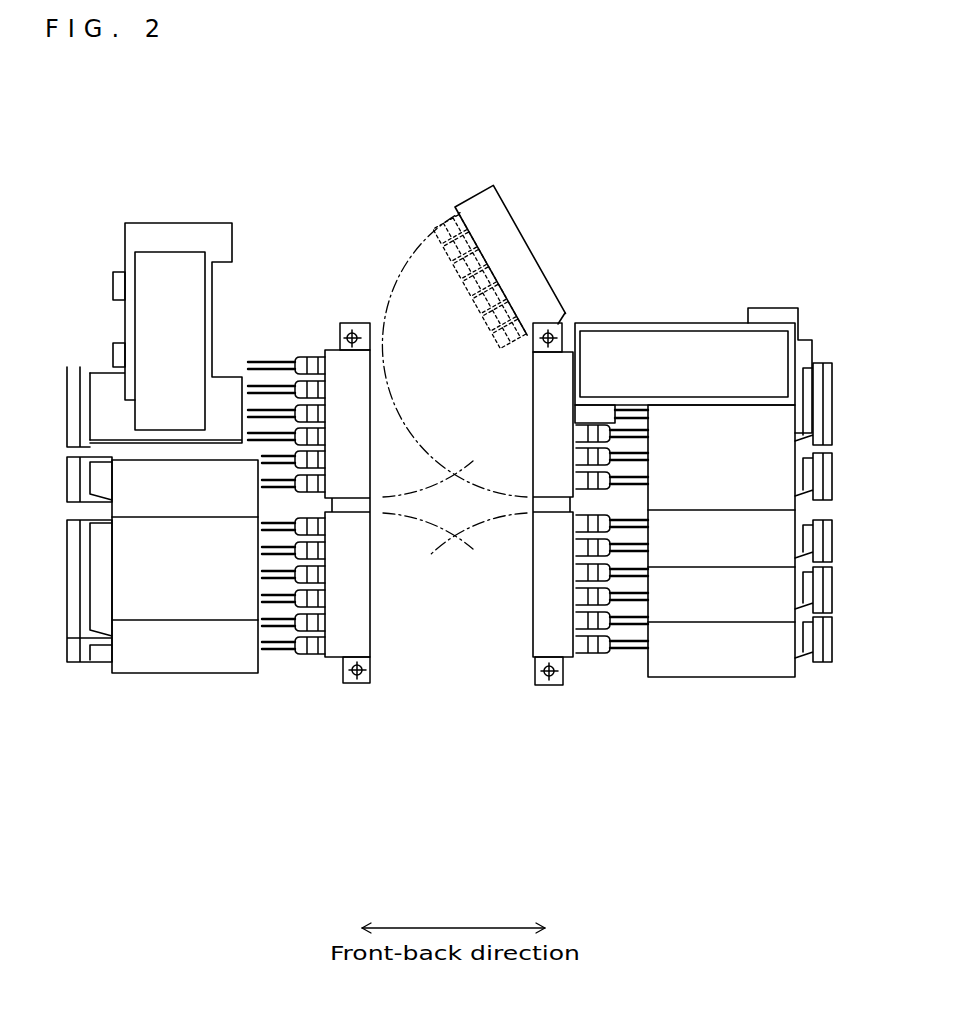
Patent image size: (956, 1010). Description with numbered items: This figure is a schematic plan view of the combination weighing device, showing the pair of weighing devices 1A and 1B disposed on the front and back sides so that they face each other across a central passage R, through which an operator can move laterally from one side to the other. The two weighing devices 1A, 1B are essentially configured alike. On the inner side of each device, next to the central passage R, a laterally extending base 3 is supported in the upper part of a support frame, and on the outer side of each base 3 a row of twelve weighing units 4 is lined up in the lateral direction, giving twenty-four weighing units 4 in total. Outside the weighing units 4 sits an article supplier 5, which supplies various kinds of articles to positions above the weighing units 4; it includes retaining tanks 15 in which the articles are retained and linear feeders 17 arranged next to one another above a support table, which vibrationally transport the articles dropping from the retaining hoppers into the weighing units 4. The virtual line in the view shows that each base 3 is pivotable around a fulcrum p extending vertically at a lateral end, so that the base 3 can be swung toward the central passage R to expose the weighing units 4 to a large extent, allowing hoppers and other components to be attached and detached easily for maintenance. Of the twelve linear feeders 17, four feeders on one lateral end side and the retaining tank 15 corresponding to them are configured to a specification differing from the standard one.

The weighing device 1A is at (680, 710).
The weighing device 1B is at (216, 710).
The base 3 is at (508, 213).
The weighing unit 4 is at (305, 356).
The article supplier 5 is at (270, 306).
The retaining tank 15 is at (160, 676).
The linear feeder 17 is at (281, 660).
The fulcrum p is at (349, 334).
The central passage R is at (454, 408).